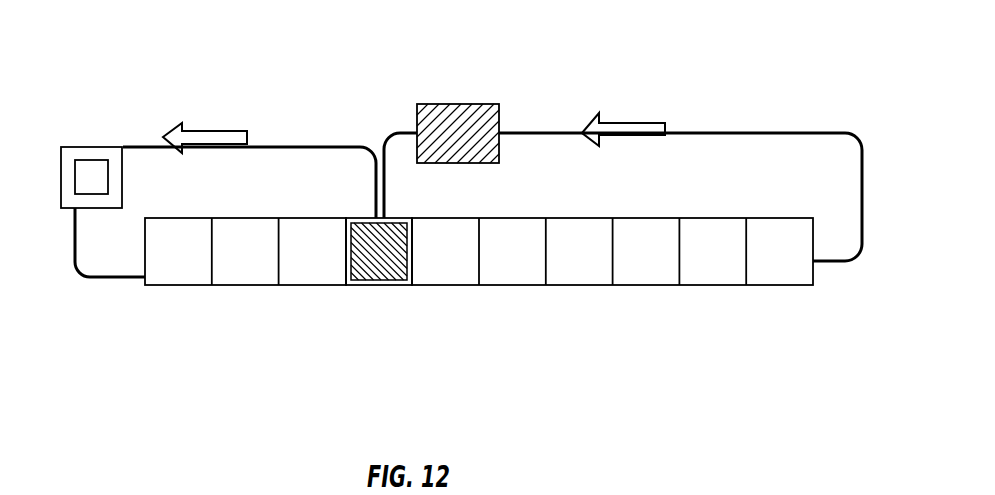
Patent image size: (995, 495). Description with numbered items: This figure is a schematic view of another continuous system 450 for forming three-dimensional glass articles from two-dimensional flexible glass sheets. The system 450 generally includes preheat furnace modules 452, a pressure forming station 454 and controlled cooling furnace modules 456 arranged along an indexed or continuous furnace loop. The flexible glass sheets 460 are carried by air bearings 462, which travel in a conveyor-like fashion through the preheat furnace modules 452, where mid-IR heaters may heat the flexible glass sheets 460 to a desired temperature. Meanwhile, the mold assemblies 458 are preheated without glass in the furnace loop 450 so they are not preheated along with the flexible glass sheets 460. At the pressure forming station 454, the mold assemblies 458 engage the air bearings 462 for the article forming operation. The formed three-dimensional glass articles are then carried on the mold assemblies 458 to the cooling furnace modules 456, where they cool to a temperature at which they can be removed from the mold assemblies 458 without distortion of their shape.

The continuous system 450 is at (752, 102).
The preheat furnace modules 452 is at (185, 310).
The pressure forming station 454 is at (373, 310).
The controlled cooling furnace modules 456 is at (587, 310).
The mold assemblies 458 is at (453, 117).
The flexible glass sheets 460 is at (89, 171).
The air bearings 462 is at (68, 188).